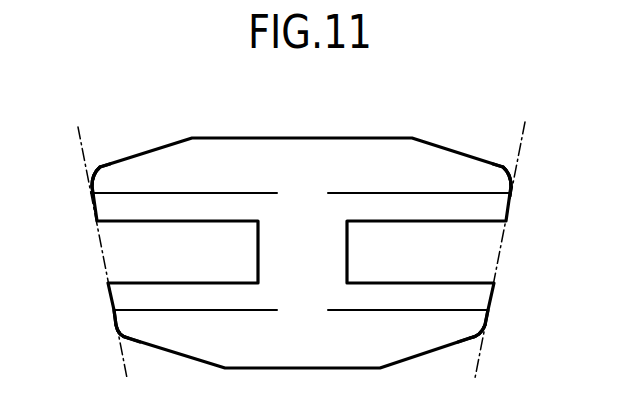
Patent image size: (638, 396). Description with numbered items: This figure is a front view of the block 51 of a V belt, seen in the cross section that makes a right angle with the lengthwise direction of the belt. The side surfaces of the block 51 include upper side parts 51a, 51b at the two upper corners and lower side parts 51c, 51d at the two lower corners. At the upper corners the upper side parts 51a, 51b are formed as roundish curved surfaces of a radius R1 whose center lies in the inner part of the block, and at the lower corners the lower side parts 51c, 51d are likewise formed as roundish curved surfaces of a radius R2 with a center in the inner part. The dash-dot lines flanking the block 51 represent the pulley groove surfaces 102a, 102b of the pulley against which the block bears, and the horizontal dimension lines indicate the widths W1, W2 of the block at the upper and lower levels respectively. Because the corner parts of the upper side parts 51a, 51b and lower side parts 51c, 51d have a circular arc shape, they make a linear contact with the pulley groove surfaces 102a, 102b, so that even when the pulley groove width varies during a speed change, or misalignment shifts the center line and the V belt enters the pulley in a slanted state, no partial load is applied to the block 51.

The block 51 is at (342, 138).
The upper side part 51a is at (95, 169).
The upper side part 51b is at (507, 169).
The lower side part 51c is at (118, 335).
The lower side part 51d is at (478, 338).
The pulley groove surface 102a is at (80, 128).
The pulley groove surface 102b is at (521, 127).
The radius R1 is at (94, 179).
The radius R2 is at (125, 334).
The upper width W1 is at (301, 192).
The lower width W2 is at (301, 309).